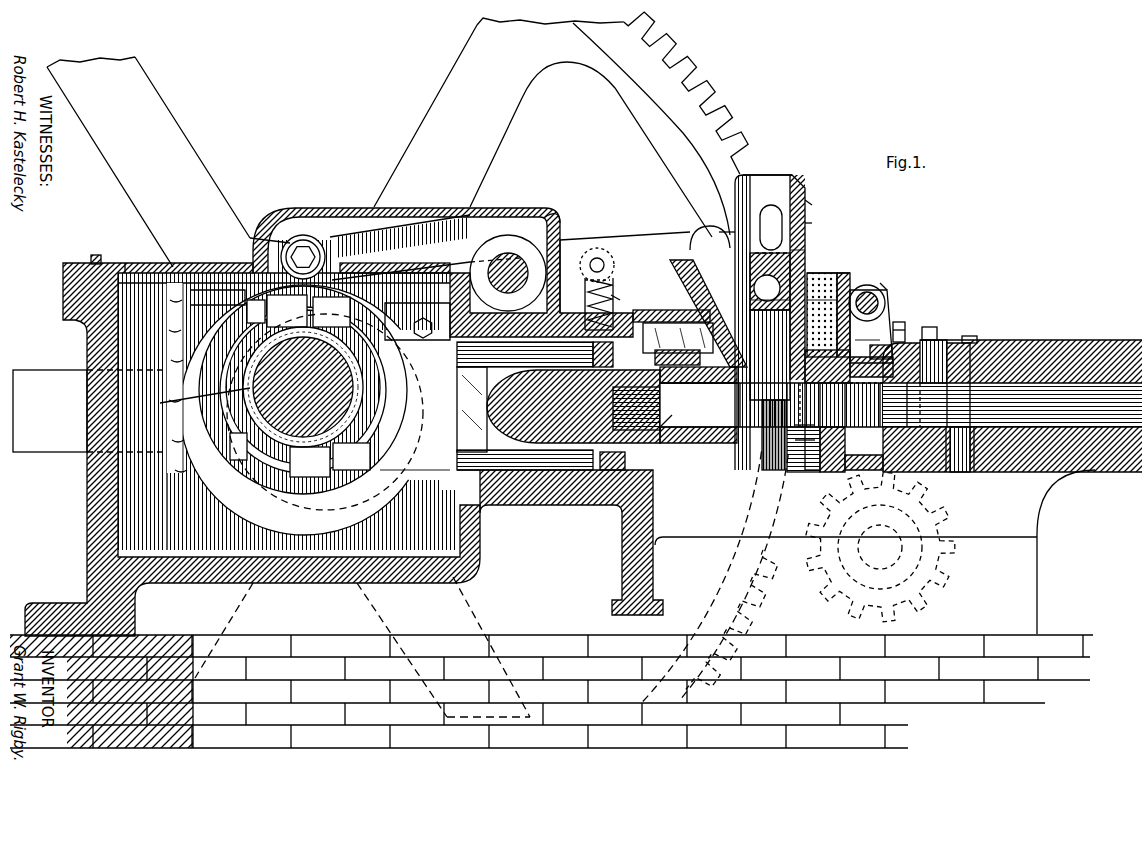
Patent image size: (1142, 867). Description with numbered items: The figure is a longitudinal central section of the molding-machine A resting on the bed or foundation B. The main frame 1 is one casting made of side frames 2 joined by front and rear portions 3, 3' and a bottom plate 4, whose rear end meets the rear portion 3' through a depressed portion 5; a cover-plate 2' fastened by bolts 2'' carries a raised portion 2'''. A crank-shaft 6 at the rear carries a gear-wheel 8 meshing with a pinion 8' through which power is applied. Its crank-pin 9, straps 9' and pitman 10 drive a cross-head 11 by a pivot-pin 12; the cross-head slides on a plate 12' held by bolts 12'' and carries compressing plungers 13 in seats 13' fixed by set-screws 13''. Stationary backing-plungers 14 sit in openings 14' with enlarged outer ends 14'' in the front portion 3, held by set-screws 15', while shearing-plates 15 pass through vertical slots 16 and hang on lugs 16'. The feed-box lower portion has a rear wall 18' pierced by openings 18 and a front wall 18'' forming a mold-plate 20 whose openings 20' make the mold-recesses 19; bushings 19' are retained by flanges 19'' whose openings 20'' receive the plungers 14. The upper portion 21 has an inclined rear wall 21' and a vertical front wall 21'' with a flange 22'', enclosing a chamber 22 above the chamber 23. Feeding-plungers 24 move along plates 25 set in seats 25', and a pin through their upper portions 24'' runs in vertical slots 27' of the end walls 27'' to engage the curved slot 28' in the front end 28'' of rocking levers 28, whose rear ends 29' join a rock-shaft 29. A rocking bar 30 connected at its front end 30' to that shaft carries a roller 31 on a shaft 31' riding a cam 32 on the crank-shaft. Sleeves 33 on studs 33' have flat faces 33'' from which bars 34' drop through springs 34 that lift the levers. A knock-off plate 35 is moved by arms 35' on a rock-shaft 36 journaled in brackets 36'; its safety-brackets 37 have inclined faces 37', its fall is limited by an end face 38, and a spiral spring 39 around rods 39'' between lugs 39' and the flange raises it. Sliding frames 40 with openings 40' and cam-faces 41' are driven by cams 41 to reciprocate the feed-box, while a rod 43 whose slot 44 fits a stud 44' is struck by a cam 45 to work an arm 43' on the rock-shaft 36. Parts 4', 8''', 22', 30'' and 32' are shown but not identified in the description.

The main frame 1 is at (560, 449).
The side frames 2 is at (728, 577).
The cover-plate 2' is at (132, 256).
The bolts 2'' is at (82, 252).
The raised portion 2''' is at (443, 263).
The front portion 3 is at (1012, 393).
The rear portion 3' is at (89, 449).
The bottom plate 4 is at (288, 596).
The frame arch opening 4' is at (551, 552).
The depressed portion 5 is at (440, 547).
The crank-shaft 6 is at (303, 387).
The gear-wheel 8 is at (417, 364).
The pinion 8' is at (891, 547).
The pinion hub 8''' is at (880, 547).
The crank-pin 9 is at (321, 387).
The straps 9' is at (322, 405).
The pitman 10 is at (325, 412).
The cross-head 11 is at (573, 406).
The pivot-pin 12 is at (613, 432).
The plate 12' is at (663, 407).
The bolts 12'' is at (608, 420).
The compressing plungers 13 is at (698, 405).
The seats 13' is at (675, 414).
The set-screw 13'' is at (698, 387).
The stationary backing-plungers 14 is at (877, 406).
The openings 14' is at (888, 405).
The enlarged outer ends 14'' is at (1021, 405).
The shearing-plates 15 is at (961, 460).
The set-screw 15' is at (940, 344).
The vertical slots 16 is at (979, 460).
The lugs 16' is at (981, 326).
The openings 18 is at (698, 376).
The rear wall 18' is at (700, 426).
The front wall 18'' is at (827, 366).
The mold-recesses 19 is at (803, 435).
The bushings 19' is at (801, 483).
The flanges 19'' is at (860, 454).
The mold-plate 20 is at (845, 462).
The openings 20' is at (808, 451).
The openings 20'' is at (809, 423).
The upper portion 21 is at (697, 310).
The rear wall 21' is at (673, 321).
The front wall 21'' is at (835, 198).
The chamber 22 is at (750, 281).
The block 22' is at (749, 304).
The flange 22'' is at (757, 355).
The chamber 23 is at (763, 431).
The feeding-plungers 24 is at (772, 245).
The upper portions 24'' is at (819, 245).
The plates 25 is at (810, 341).
The seats 25' is at (779, 406).
The vertical slots 27' is at (770, 322).
The end walls 27'' is at (779, 163).
The rocking levers 28 is at (625, 272).
The curved slot 28' is at (700, 228).
The front end 28'' is at (727, 215).
The rock-shaft 29 is at (508, 273).
The rear ends 29' is at (572, 208).
The rocking bar 30 is at (400, 247).
The front end 30' is at (495, 242).
The arm pivot 30'' is at (301, 231).
The roller 31 is at (260, 238).
The shaft 31' is at (315, 252).
The cam 32 is at (287, 411).
The bearing housing liner 32' is at (170, 411).
The sleeves 33 is at (598, 252).
The studs 33' is at (586, 260).
The flat faces 33'' is at (621, 297).
The springs 34 is at (588, 304).
The bars 34' is at (628, 295).
The knock-off plate 35 is at (876, 317).
The arms 35' is at (905, 286).
The rock-shaft 36 is at (884, 324).
The brackets 36' is at (838, 218).
The safety-brackets 37 is at (903, 327).
The inclined lower faces 37' is at (866, 395).
The end face 38 is at (865, 336).
The spiral spring 39 is at (851, 315).
The lugs 39' is at (859, 258).
The rods 39'' is at (847, 263).
The sliding frames 40 is at (287, 400).
The openings 40' is at (218, 305).
The cams 41 is at (415, 478).
The cam-face 41' is at (301, 396).
The rod 43 is at (776, 356).
The arm 43' is at (906, 331).
The slot 44 is at (417, 319).
The bolt or stud 44' is at (426, 335).
The cam 45 is at (250, 457).
The machine A is at (537, 427).
The bed or foundation B is at (1060, 626).